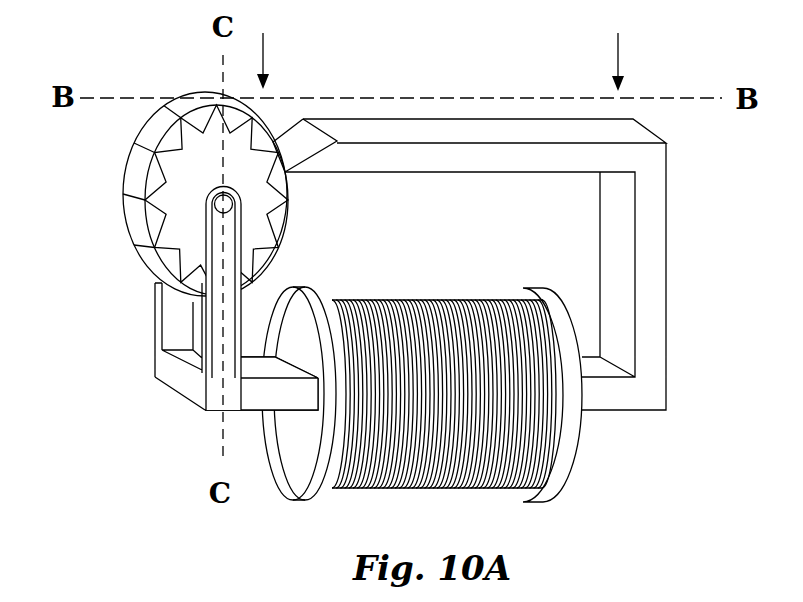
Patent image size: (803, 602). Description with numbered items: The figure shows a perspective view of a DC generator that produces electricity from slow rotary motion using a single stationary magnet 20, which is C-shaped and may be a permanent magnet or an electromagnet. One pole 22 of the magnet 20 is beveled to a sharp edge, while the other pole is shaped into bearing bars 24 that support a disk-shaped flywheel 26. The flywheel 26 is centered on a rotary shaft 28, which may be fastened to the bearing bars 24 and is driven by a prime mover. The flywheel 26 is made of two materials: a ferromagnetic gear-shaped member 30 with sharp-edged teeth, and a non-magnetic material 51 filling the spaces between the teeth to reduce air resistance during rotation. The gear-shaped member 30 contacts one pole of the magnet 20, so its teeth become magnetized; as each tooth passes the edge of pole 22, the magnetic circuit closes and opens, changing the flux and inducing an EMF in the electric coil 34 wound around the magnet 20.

The magnet 20 is at (440, 172).
The pole 22 is at (303, 153).
The bearing bars 24 is at (172, 333).
The flywheel 26 is at (203, 82).
The rotary shaft 28 is at (232, 208).
The gear-shaped member 30 is at (150, 172).
The electric coil 34 is at (328, 282).
The non-magnetic material 51 is at (137, 215).